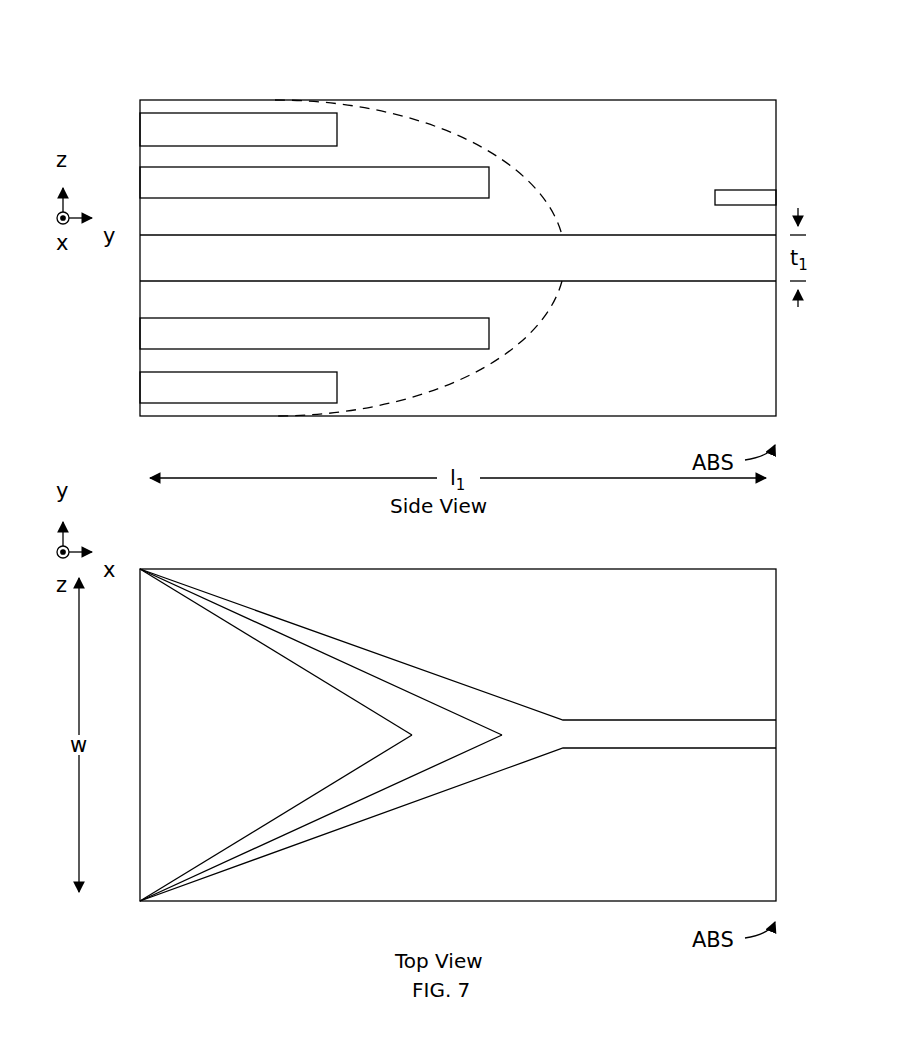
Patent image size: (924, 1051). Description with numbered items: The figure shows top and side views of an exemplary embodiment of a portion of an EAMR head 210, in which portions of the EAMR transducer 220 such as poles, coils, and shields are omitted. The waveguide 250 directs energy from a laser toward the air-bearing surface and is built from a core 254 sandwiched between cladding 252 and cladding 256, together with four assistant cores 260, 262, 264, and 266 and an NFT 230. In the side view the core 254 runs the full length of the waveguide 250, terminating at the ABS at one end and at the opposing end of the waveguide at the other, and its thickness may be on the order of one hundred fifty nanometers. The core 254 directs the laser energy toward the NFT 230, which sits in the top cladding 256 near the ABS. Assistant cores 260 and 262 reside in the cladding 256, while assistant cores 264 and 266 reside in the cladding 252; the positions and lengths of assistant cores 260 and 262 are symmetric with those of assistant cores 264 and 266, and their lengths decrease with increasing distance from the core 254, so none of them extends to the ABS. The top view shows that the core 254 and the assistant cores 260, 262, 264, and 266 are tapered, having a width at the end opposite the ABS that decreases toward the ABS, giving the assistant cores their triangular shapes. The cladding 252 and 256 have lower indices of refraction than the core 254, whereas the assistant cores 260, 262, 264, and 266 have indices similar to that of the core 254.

The EAMR head 210 is at (461, 35).
The EAMR transducer 220 is at (230, 78).
The waveguide 250 is at (277, 555).
The cladding 252 is at (777, 598).
The core 254 is at (140, 250).
The cladding 256 is at (776, 130).
The assistant core 260 is at (140, 128).
The assistant core 262 is at (140, 181).
The assistant core 264 is at (140, 385).
The assistant core 266 is at (140, 333).
The NFT 230 is at (776, 195).